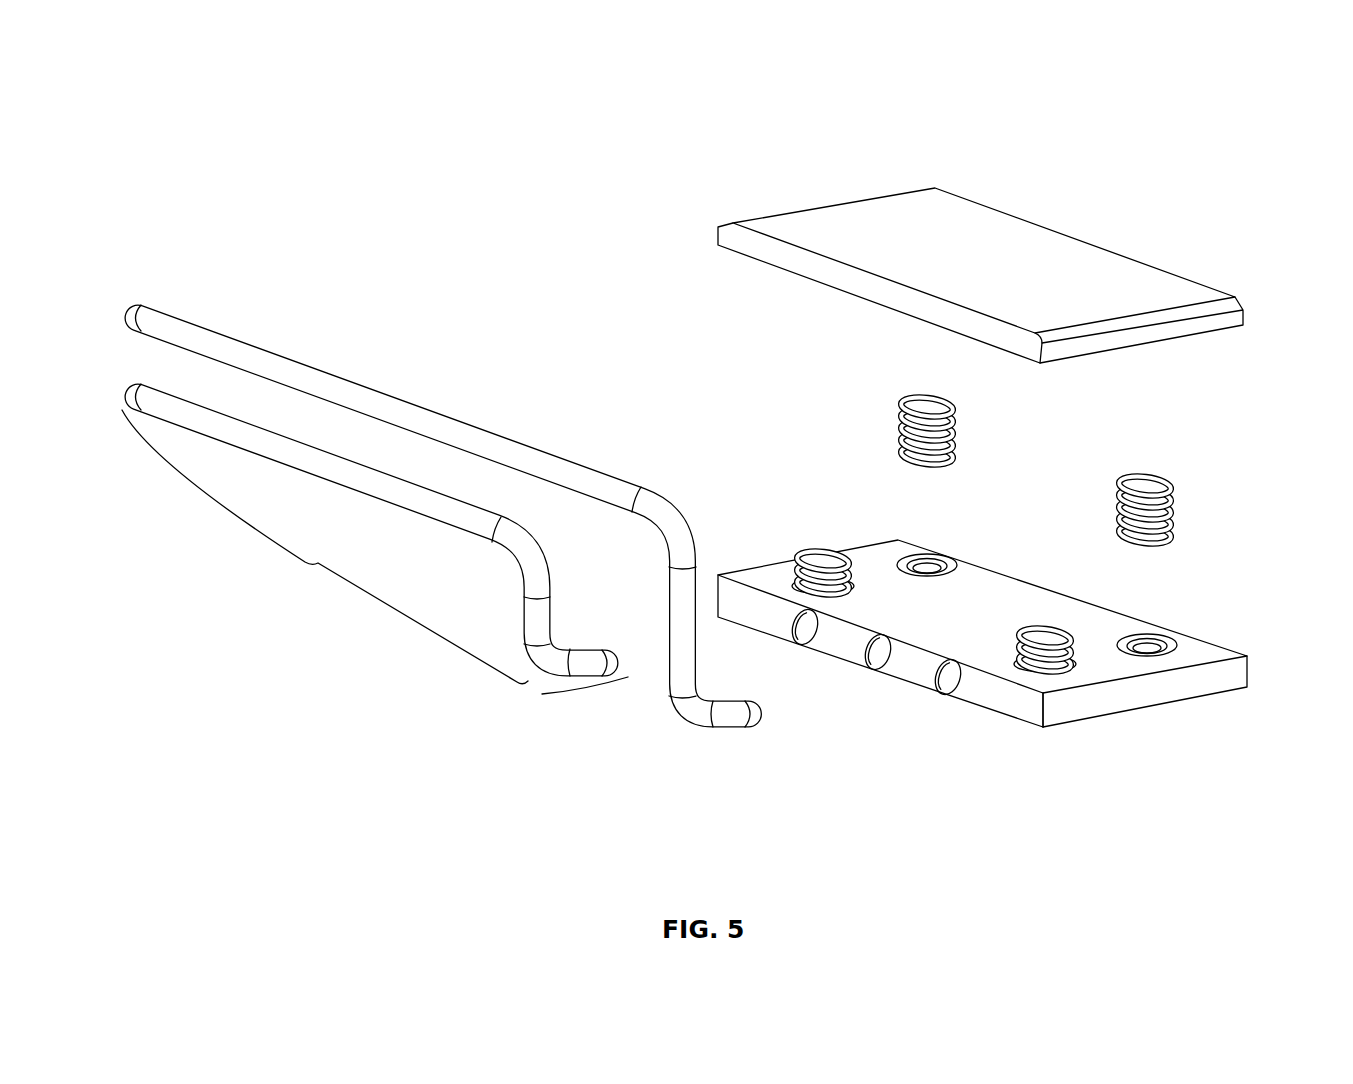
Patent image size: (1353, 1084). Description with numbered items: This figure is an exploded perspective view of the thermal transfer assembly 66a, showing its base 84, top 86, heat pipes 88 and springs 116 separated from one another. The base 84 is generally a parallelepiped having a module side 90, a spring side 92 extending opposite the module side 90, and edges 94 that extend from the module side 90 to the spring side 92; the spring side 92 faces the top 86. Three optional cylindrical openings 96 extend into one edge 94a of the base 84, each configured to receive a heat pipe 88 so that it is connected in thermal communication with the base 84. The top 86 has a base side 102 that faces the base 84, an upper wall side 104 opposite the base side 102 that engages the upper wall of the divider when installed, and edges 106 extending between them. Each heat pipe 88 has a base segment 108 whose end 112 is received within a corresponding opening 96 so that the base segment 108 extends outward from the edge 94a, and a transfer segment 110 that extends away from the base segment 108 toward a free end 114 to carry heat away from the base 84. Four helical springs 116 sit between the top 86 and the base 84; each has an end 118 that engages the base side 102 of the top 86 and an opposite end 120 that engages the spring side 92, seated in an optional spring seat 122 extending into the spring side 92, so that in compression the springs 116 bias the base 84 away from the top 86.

The thermal transfer assembly 66a is at (398, 102).
The base 84 is at (991, 648).
The top 86 is at (981, 274).
The heat pipe 88 is at (537, 682).
The module side 90 is at (983, 718).
The spring side 92 is at (964, 587).
The edge 94 is at (1113, 700).
The edge 94a is at (1028, 712).
The opening 96 is at (807, 627).
The base side 102 is at (1011, 358).
The upper wall side 104 is at (1028, 270).
The edge 106 is at (717, 237).
The base segment 108 is at (590, 695).
The transfer segment 110 is at (466, 513).
The end 112 is at (590, 641).
The end 114 is at (120, 307).
The spring 116 is at (980, 572).
The end 118 is at (897, 392).
The end 120 is at (942, 469).
The spring seat 122 is at (907, 557).